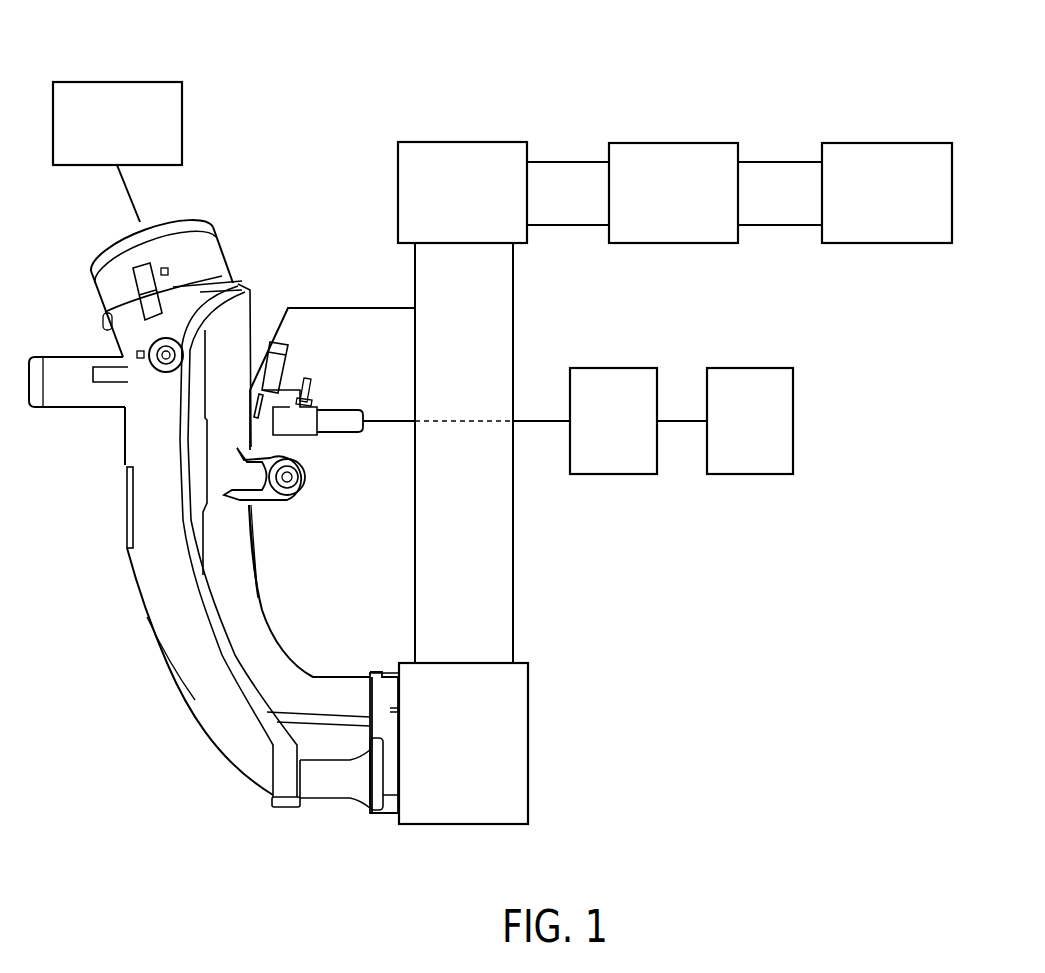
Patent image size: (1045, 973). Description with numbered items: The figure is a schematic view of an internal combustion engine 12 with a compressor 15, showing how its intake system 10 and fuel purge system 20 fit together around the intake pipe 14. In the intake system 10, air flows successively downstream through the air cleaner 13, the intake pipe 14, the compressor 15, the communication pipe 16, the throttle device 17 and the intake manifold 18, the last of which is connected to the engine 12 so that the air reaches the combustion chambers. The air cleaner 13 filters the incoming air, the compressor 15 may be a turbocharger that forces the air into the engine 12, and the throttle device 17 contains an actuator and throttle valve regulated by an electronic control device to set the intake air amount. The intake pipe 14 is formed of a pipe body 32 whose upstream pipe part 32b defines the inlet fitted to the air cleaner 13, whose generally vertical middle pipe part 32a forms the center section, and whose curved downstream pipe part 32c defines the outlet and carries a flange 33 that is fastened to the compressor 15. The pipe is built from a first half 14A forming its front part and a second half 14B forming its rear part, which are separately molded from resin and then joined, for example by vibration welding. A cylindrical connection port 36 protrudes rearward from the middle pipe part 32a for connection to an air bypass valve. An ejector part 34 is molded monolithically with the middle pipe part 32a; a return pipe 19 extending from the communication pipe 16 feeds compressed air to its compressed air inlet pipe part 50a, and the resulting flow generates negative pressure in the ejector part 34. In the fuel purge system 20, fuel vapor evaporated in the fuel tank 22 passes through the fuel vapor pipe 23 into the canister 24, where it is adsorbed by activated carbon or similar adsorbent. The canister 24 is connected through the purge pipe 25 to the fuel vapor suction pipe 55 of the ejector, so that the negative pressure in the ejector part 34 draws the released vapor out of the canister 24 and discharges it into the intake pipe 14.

The intake system 10 is at (314, 90).
The internal combustion engine 12 is at (870, 142).
The air cleaner 13 is at (117, 82).
The intake pipe 14 is at (127, 603).
The first half 14A is at (258, 562).
The second half 14B is at (157, 655).
The compressor 15 is at (528, 722).
The communication pipe 16 is at (513, 563).
The throttle device 17 is at (467, 142).
The intake manifold 18 is at (672, 142).
The return pipe 19 is at (365, 308).
The fuel purge system 20 is at (680, 495).
The fuel tank 22 is at (764, 368).
The fuel vapor pipe 23 is at (683, 421).
The canister 24 is at (628, 368).
The purge pipe 25 is at (532, 421).
The pipe body 32 is at (123, 549).
The middle pipe part 32a is at (138, 500).
The upstream pipe part 32b is at (210, 255).
The downstream pipe part 32c is at (227, 752).
The flange 33 is at (393, 685).
The ejector part 34 is at (300, 368).
The connection port 36 is at (68, 357).
The compressed air inlet pipe part 50a is at (262, 342).
The fuel vapor suction pipe 55 is at (339, 428).